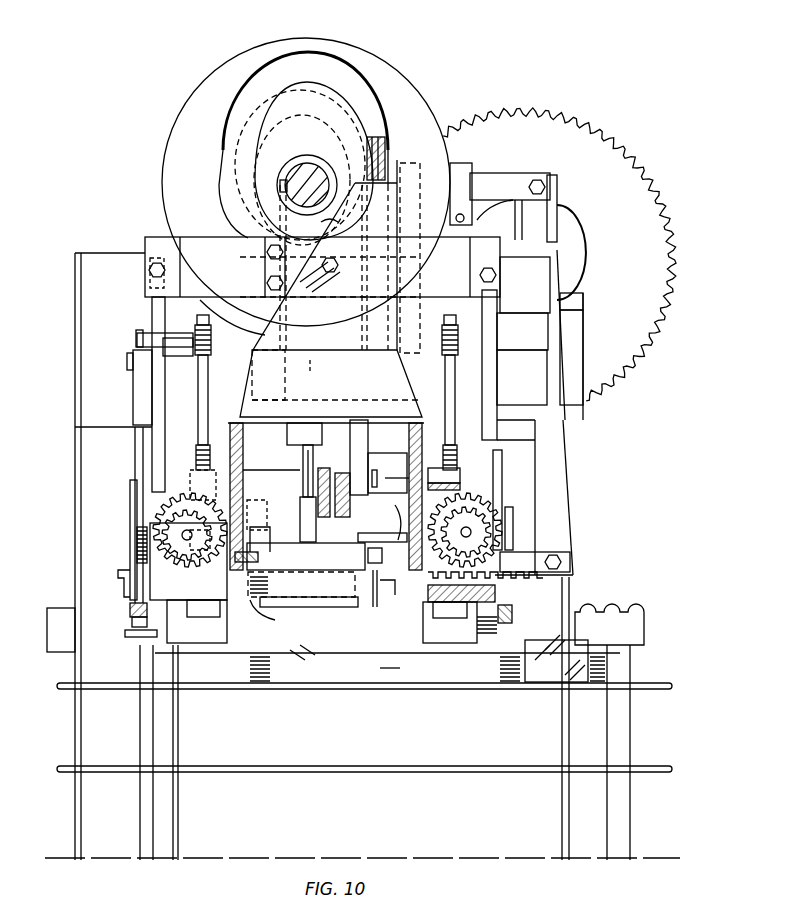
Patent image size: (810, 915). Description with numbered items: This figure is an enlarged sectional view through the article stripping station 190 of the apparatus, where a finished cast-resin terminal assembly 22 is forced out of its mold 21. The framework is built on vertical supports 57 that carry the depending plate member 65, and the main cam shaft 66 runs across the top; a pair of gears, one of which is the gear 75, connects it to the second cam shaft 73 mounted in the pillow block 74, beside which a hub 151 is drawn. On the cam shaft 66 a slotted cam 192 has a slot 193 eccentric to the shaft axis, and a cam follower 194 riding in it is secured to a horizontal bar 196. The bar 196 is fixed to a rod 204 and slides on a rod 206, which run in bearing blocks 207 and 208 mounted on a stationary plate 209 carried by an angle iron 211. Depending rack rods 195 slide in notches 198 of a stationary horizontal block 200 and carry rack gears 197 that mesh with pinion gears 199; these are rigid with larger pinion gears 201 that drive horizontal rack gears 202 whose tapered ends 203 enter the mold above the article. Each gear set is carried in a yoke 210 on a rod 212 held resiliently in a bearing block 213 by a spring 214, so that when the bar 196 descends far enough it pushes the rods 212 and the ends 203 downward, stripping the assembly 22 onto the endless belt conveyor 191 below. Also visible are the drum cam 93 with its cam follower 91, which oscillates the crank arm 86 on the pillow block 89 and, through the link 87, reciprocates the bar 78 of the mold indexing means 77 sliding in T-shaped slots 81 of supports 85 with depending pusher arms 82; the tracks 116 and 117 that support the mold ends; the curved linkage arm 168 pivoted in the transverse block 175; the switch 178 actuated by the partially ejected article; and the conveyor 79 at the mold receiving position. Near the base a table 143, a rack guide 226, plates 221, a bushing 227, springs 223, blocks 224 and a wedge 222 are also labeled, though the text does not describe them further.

The article stripping station 190 is at (125, 152).
The slotted cam 192 is at (228, 68).
The slot 193 is at (346, 68).
The drum cam 93 is at (238, 132).
The main cam shaft 66 is at (296, 178).
The bearing blocks 208 is at (352, 168).
The rod 206 is at (386, 157).
The cam follower 91 is at (420, 251).
The gear 75 is at (585, 130).
The horizontal bar 196 is at (212, 248).
The plate 209 is at (312, 228).
The second cam shaft 73 is at (517, 253).
The hub 151 is at (576, 232).
The rack rods 195 is at (150, 308).
The pillow block 89 is at (555, 270).
The pillow block 74 is at (585, 295).
The rod 204 is at (262, 318).
The cam follower 194 is at (315, 294).
The spring 214 is at (211, 340).
The rod 212 is at (210, 362).
The notches 198 is at (163, 376).
The horizontal block 200 is at (137, 372).
The bearing block 207 is at (314, 363).
The angle iron 211 is at (247, 392).
The transverse block 175 is at (562, 368).
The table 143 is at (135, 440).
The plate member 65 is at (243, 438).
The mold indexing means 77 is at (343, 450).
The crank arm 86 is at (372, 436).
The supports 85 is at (387, 468).
The bearing block 213 is at (236, 473).
The reciprocating bar 78 is at (313, 476).
The larger pinion gears 201 is at (236, 494).
The track 116 is at (381, 588).
The yoke 210 is at (230, 515).
The pusher arms 82 is at (304, 498).
The track 117 is at (262, 548).
The link 87 is at (350, 520).
The curved linkage arm 168 is at (578, 485).
The pinion gears 199 is at (178, 518).
The rack gears 197 is at (528, 516).
The T-shaped slots 81 is at (323, 530).
The mold 21 is at (372, 548).
The rack guide 226 is at (130, 565).
The conveyor 79 is at (648, 587).
The rack gears 202 is at (130, 613).
The plate 221 is at (119, 624).
The tapered ends 203 is at (285, 608).
The bushing 227 is at (512, 612).
The spring 223 is at (135, 636).
The block 224 is at (140, 640).
The terminal assembly 22 is at (290, 664).
The switch 178 is at (400, 668).
The wedge 222 is at (530, 645).
The endless belt conveyor 191 is at (637, 684).
The vertical supports 57 is at (75, 722).